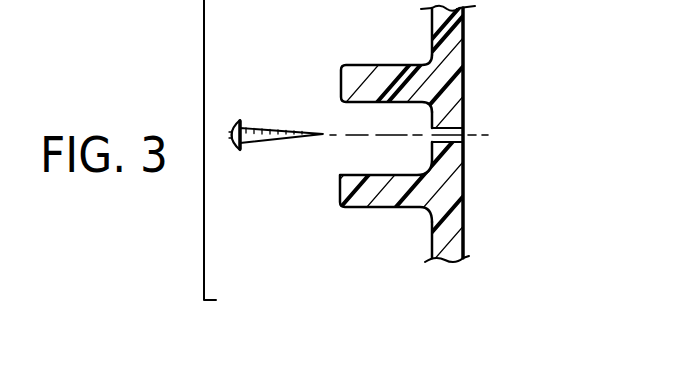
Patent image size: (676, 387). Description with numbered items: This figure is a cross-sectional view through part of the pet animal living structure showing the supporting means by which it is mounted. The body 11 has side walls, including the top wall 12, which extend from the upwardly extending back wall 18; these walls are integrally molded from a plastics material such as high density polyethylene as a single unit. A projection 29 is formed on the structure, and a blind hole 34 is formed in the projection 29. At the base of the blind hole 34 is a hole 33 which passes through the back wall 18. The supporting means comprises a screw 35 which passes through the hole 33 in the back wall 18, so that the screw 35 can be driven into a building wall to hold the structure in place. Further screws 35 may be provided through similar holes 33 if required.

The body 11 is at (417, 153).
The top wall 12 is at (462, 262).
The back wall 18 is at (465, 221).
The projection 29 is at (385, 210).
The hole 33 is at (468, 134).
The blind hole 34 is at (368, 172).
The screw 35 is at (278, 128).